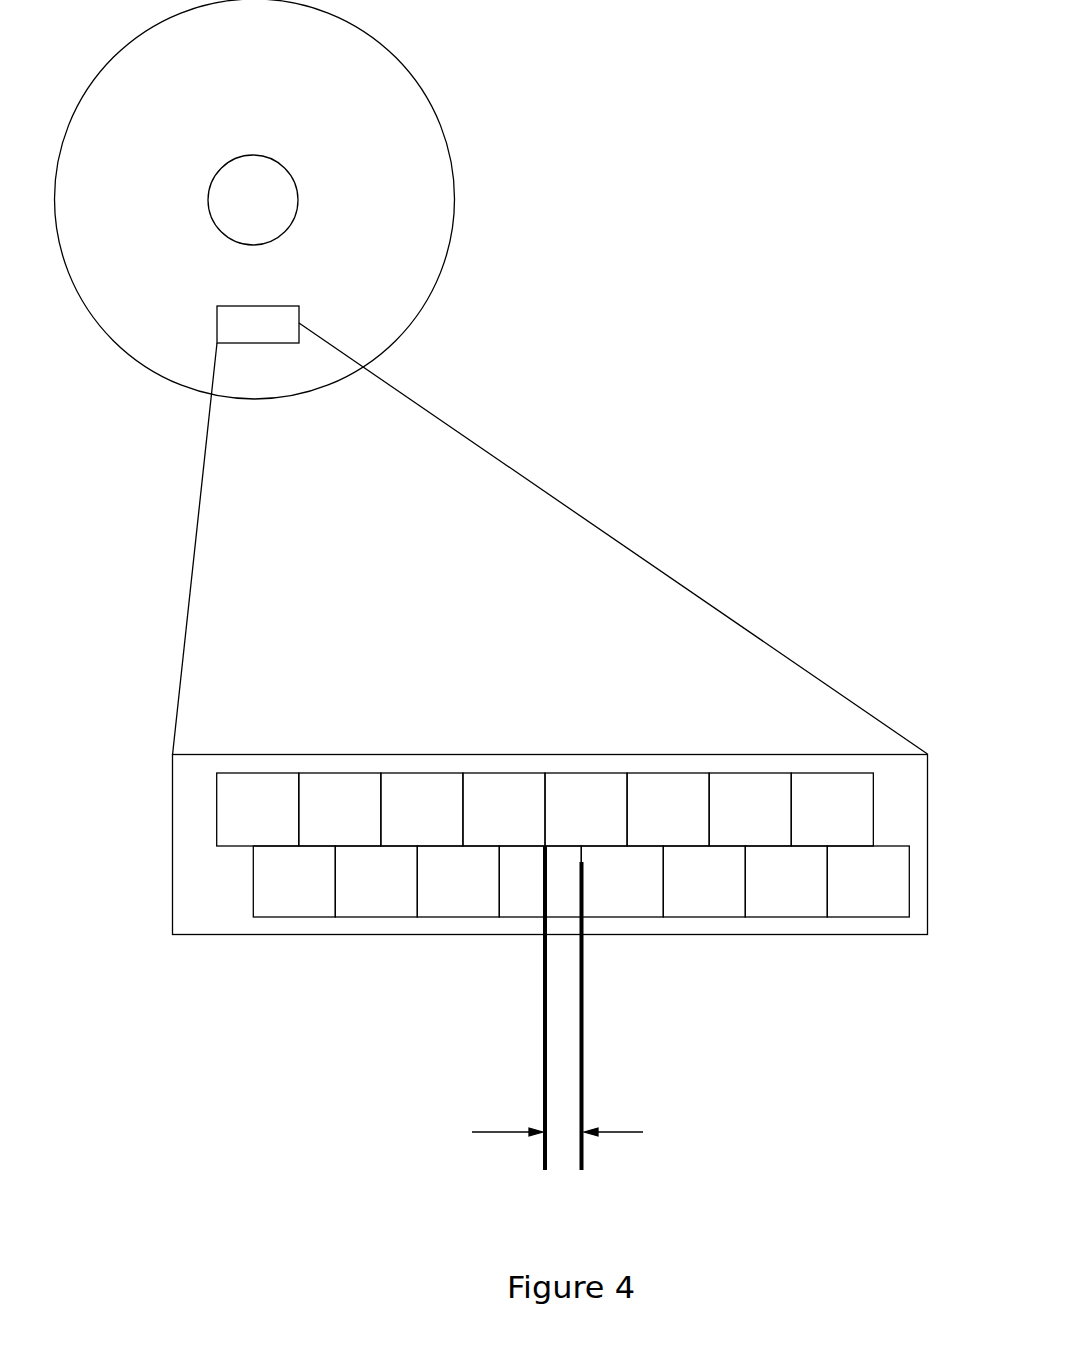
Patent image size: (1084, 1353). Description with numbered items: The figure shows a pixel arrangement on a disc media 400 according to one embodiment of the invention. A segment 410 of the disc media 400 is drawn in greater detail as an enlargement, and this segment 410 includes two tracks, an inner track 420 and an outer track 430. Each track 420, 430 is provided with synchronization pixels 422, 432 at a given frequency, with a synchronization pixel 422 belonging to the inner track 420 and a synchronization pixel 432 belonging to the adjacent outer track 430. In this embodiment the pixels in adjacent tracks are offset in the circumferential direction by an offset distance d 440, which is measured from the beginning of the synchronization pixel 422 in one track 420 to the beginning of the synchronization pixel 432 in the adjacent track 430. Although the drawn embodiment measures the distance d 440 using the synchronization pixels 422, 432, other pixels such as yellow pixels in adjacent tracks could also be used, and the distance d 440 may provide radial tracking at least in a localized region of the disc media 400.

The disc media 400 is at (338, 199).
The segment 410 is at (386, 200).
The inner track 420 is at (507, 620).
The synchronization pixel 422 is at (545, 747).
The outer track 430 is at (500, 894).
The synchronization pixel 432 is at (596, 1063).
The offset distance d 440 is at (634, 1008).